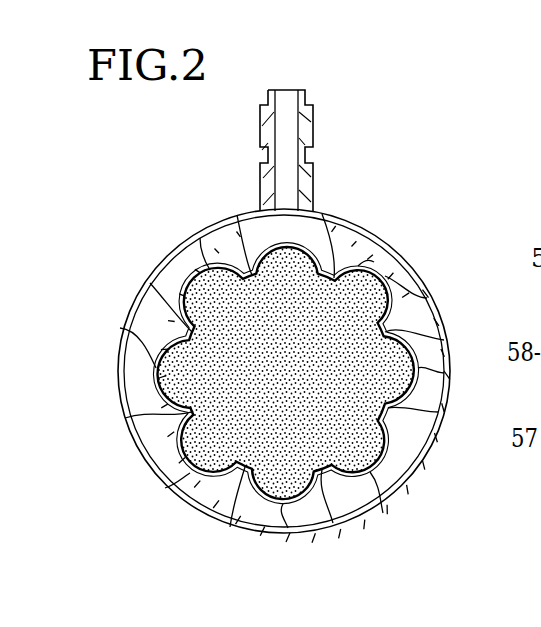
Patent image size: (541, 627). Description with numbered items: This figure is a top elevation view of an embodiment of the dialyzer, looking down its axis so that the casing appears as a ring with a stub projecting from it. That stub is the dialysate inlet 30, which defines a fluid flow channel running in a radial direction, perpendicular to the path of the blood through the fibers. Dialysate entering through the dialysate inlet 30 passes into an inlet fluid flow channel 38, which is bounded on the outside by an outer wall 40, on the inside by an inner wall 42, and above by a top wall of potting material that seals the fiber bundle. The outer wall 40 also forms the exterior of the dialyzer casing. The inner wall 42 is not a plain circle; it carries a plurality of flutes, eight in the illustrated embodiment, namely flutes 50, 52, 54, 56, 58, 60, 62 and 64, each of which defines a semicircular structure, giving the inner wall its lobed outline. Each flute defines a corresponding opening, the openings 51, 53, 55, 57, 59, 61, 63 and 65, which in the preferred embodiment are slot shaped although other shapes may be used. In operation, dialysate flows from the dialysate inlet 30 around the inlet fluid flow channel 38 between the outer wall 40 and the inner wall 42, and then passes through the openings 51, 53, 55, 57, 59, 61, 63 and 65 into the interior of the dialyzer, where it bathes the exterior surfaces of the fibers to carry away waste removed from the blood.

The dialysate inlet 30 is at (316, 167).
The inlet fluid flow channel 38 is at (405, 253).
The outer wall 40 is at (415, 470).
The inner wall 42 is at (392, 440).
The flute 50 is at (444, 373).
The opening 51 is at (438, 412).
The flute 52 is at (383, 513).
The opening 53 is at (333, 523).
The flute 54 is at (288, 528).
The opening 55 is at (230, 527).
The flute 56 is at (165, 488).
The opening 57 is at (125, 418).
The flute 58 is at (120, 328).
The opening 59 is at (150, 283).
The flute 60 is at (200, 238).
The opening 61 is at (237, 215).
The flute 62 is at (322, 214).
The opening 63 is at (374, 262).
The flute 64 is at (427, 298).
The opening 65 is at (444, 340).